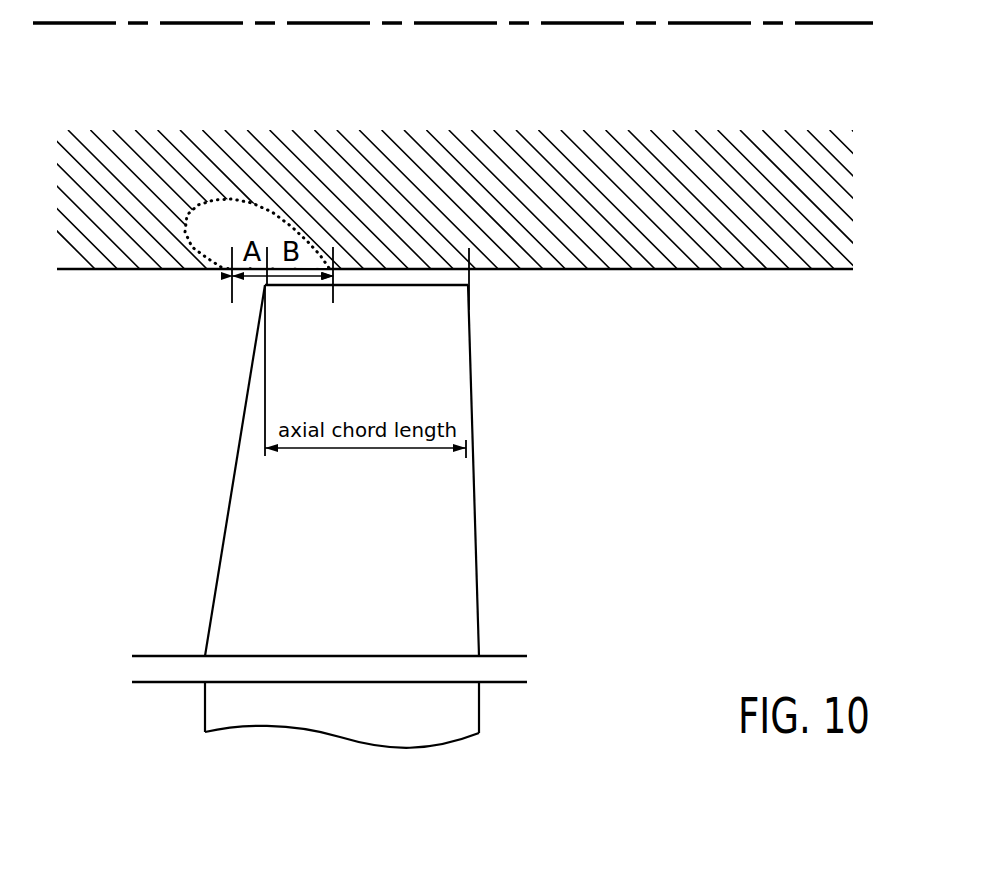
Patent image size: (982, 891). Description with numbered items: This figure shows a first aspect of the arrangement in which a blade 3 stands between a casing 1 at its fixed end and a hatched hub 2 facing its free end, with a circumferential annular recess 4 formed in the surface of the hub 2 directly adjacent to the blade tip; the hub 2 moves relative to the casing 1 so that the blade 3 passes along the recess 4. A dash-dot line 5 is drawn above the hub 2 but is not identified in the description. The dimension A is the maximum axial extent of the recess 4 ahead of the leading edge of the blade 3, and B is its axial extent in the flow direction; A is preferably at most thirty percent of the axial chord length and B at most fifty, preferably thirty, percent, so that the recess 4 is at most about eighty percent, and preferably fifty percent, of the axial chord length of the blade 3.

The casing 1 is at (460, 705).
The hub 2 is at (838, 218).
The blade 3 is at (467, 533).
The annular recess 4 is at (198, 230).
The axis of rotation 5 is at (838, 26).